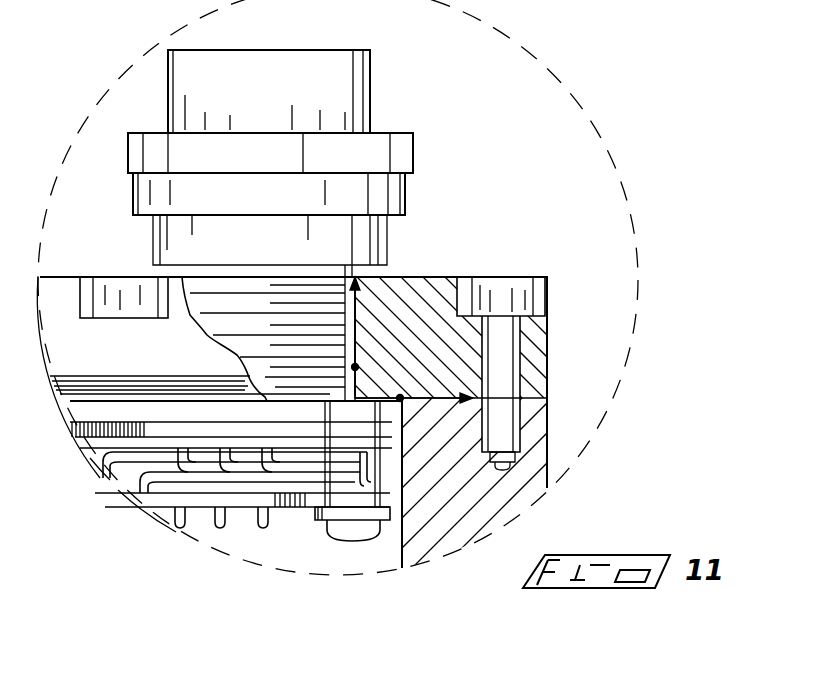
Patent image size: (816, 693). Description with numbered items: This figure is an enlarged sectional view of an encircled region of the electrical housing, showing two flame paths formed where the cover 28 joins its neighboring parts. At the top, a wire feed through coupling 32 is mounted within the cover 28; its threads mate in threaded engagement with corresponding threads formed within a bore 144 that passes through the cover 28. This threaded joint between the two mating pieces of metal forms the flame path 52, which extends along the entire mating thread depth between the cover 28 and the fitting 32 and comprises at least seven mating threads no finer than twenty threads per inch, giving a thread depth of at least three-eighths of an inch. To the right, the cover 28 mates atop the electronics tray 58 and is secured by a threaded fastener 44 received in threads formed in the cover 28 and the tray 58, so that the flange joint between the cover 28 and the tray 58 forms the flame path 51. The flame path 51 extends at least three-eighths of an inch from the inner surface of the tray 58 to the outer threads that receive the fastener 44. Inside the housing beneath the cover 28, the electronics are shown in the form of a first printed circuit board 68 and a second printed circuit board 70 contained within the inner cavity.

The wire feed through coupling 32 is at (370, 88).
The cover 28 is at (110, 362).
The bore 144 is at (343, 387).
The first printed circuit board 68 is at (163, 428).
The second printed circuit board 70 is at (302, 510).
The flame path 52 is at (357, 320).
The threaded fastener 44 is at (503, 283).
The electronics tray 58 is at (549, 437).
The flame path 51 is at (407, 404).